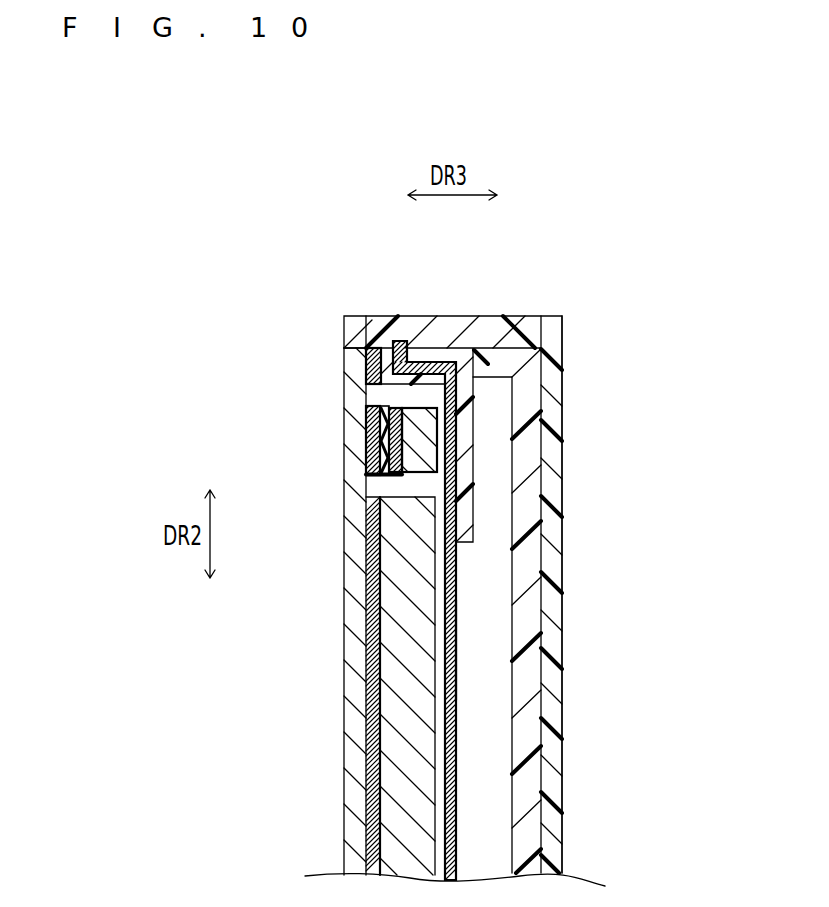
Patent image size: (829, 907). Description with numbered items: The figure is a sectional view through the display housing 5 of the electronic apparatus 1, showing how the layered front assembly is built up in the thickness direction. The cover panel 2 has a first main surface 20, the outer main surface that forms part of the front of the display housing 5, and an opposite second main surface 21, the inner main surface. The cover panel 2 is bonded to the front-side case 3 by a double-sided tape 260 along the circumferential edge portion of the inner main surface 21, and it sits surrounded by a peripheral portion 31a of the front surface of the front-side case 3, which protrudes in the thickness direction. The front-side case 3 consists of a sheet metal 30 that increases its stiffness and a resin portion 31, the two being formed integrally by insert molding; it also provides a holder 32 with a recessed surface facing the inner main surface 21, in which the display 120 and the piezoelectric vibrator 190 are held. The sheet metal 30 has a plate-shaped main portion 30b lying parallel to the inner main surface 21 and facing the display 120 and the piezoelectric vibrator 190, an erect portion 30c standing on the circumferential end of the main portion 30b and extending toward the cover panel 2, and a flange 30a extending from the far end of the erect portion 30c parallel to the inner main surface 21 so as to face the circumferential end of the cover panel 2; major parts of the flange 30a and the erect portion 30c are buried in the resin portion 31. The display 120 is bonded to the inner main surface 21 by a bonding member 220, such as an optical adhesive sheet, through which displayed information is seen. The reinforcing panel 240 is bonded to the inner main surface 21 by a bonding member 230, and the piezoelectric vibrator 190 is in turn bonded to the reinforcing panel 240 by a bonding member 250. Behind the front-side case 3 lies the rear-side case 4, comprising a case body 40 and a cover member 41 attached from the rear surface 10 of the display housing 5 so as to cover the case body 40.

The electronic apparatus 1 is at (580, 268).
The cover panel 2 is at (358, 616).
The front-side case 3 is at (630, 502).
The rear-side case 4 is at (628, 762).
The display housing 5 is at (601, 410).
The rear surface 10 is at (563, 728).
The first main surface 20 is at (350, 705).
The second main surface 21 is at (380, 673).
The sheet metal 30 is at (456, 562).
The flange 30a is at (399, 342).
The main portion 30b is at (456, 633).
The erect portion 30c is at (420, 362).
The resin portion 31 is at (467, 522).
The peripheral portion 31a is at (357, 330).
The holder 32 is at (425, 482).
The case body 40 is at (527, 782).
The cover member 41 is at (550, 820).
The display 120 is at (390, 768).
The piezoelectric vibrator 190 is at (413, 413).
The bonding member 220 is at (378, 477).
The bonding member 230 is at (395, 462).
The reinforcing panel 240 is at (384, 452).
The bonding member 250 is at (373, 418).
The double-sided tape 260 is at (372, 348).